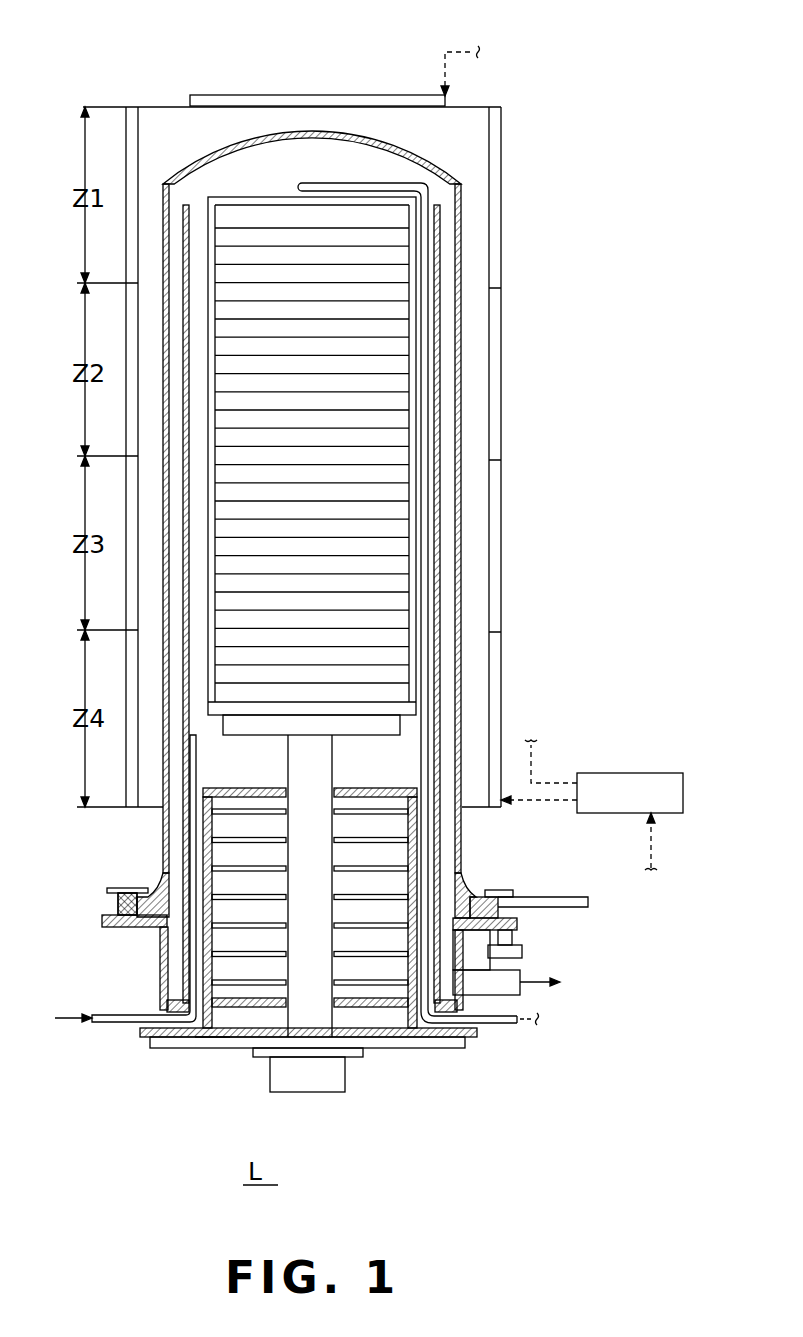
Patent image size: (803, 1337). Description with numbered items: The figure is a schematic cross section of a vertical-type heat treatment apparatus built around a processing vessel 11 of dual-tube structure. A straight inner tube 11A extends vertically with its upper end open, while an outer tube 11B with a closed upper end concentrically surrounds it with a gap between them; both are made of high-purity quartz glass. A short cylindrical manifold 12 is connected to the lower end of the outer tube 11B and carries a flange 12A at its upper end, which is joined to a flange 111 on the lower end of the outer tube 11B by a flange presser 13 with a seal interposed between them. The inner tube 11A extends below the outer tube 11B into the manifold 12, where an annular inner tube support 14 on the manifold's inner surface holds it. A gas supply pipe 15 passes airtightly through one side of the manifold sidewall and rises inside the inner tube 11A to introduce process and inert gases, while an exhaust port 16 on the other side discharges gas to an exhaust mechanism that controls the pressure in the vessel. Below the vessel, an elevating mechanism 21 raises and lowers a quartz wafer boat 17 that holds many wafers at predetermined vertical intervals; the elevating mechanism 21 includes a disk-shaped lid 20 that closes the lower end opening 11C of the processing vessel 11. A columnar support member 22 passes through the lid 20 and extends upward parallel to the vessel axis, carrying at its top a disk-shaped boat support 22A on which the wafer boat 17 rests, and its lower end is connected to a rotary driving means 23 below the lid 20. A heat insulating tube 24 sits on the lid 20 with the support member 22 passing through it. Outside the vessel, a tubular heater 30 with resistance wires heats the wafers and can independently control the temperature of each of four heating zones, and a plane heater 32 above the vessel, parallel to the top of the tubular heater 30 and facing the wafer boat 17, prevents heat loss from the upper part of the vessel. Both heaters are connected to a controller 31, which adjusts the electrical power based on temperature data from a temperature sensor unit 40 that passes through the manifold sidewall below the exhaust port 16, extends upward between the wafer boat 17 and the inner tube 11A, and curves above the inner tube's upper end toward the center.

The processing vessel 11 is at (398, 607).
The inner tube 11A is at (443, 243).
The outer tube 11B is at (463, 330).
The lower end opening 11C is at (212, 1040).
The manifold 12 is at (163, 1000).
The flange 12A is at (140, 917).
The flange presser 13 is at (120, 907).
The inner tube support 14 is at (170, 1015).
The gas supply pipe 15 is at (112, 1023).
The exhaust port 16 is at (508, 977).
The wafer boat 17 is at (416, 508).
The lid 20 is at (403, 1046).
The elevating mechanism 21 is at (320, 1103).
The support member 22 is at (322, 777).
The boat support 22A is at (388, 722).
The rotary driving means 23 is at (338, 1087).
The heat insulating tube 24 is at (205, 843).
The tubular heater 30 is at (498, 408).
The controller 31 is at (607, 773).
The plane heater 32 is at (215, 95).
The temperature sensor unit 40 is at (490, 1030).
The flange 111 is at (132, 897).